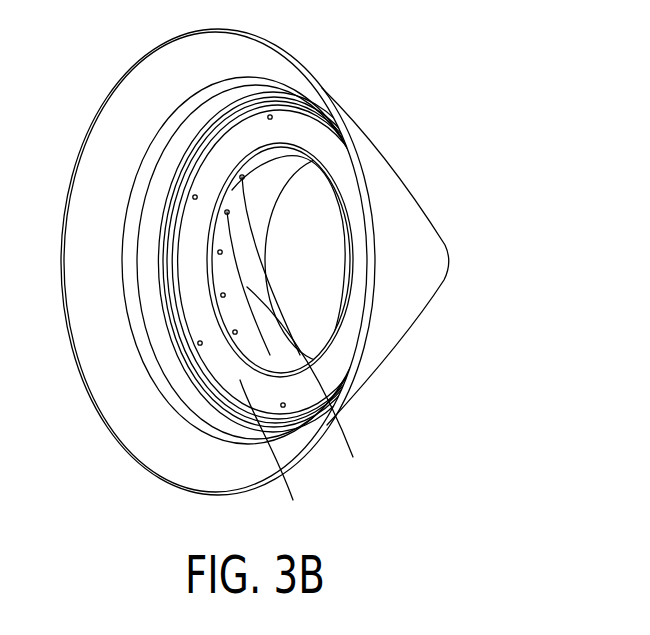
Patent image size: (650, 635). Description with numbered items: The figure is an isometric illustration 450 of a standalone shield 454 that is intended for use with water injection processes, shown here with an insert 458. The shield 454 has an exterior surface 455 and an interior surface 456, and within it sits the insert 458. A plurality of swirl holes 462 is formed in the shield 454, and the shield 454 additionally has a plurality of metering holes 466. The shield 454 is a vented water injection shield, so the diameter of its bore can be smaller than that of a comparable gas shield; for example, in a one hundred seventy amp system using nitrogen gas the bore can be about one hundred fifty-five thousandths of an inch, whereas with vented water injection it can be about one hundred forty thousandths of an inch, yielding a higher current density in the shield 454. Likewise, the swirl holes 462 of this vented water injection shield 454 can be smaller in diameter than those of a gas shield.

The isometric illustration 450 is at (466, 105).
The shield 454 is at (113, 90).
The exterior surface 455 is at (370, 142).
The interior surface 456 is at (183, 465).
The insert 458 is at (272, 314).
The swirl holes 462 is at (301, 318).
The metering holes 466 is at (268, 118).